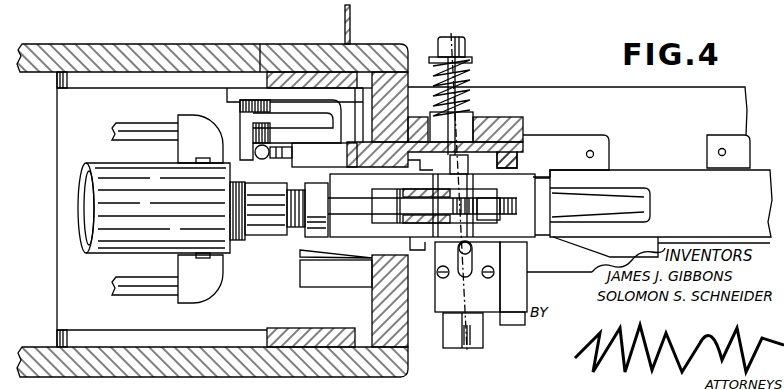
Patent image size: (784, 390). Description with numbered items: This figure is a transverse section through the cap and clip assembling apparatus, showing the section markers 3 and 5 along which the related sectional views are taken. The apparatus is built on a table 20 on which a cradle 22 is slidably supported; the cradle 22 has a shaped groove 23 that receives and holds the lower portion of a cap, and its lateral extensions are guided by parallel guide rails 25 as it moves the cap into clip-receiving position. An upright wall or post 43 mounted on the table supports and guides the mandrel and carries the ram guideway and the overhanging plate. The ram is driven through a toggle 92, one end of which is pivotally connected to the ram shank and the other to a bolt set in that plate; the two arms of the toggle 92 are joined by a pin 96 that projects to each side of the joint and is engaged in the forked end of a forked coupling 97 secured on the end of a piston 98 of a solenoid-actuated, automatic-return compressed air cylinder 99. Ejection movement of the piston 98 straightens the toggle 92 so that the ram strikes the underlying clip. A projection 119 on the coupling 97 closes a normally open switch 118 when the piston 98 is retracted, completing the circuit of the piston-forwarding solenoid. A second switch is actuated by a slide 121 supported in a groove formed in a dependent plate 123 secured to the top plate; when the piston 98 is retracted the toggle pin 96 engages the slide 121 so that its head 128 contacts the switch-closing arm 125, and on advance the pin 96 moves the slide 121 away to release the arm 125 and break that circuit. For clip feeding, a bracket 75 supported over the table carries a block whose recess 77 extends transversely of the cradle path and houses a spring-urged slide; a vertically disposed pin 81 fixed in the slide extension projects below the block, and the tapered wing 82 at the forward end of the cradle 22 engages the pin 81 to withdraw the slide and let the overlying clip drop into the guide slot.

The upright wall or post 43 is at (398, 44).
The switch-closing arm 125 is at (270, 113).
The head 128 is at (256, 151).
The compressed air cylinder 99 is at (97, 163).
The piston 98 is at (288, 227).
The forked coupling 97 is at (340, 187).
The projection 119 is at (345, 250).
The normally open switch 118 is at (306, 284).
The pin 96 is at (412, 172).
The toggle 92 is at (444, 208).
The pin 81 is at (460, 248).
The bracket 75 is at (483, 346).
The recess 77 is at (510, 308).
The dependent plate 123 is at (485, 116).
The slide 121 is at (503, 142).
The table 20 is at (543, 89).
The guide rails 25 is at (568, 136).
The cradle 22 is at (652, 178).
The groove 23 is at (605, 196).
The wing 82 is at (633, 248).
The section line 5 is at (298, 1).
The section line 3 is at (450, 18).